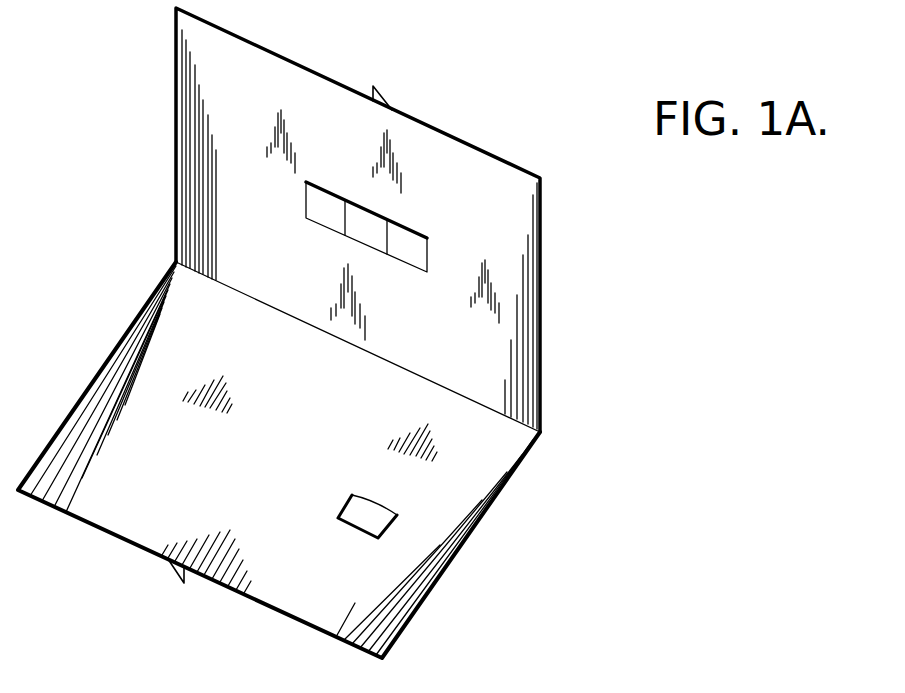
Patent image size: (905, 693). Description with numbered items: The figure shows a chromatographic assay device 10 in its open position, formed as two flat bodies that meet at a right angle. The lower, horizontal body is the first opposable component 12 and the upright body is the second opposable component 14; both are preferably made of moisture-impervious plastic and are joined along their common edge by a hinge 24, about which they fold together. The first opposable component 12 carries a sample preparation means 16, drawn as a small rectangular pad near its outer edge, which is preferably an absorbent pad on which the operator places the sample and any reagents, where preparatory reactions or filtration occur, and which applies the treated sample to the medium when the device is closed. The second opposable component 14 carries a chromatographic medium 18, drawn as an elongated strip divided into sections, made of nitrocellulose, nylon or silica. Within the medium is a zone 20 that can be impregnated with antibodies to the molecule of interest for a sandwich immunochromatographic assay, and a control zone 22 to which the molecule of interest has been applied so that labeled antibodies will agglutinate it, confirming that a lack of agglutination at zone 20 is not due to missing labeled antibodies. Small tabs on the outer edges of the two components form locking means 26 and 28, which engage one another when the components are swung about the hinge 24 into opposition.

The chromatographic assay device 10 is at (543, 432).
The first opposable component 12 is at (388, 628).
The second opposable component 14 is at (523, 220).
The sample preparation means 16 is at (390, 519).
The chromatographic medium 18 is at (306, 210).
The zone 20 is at (412, 235).
The control zone 22 is at (325, 187).
The hinge 24 is at (230, 290).
The locking means 26 is at (392, 88).
The locking means 28 is at (182, 584).